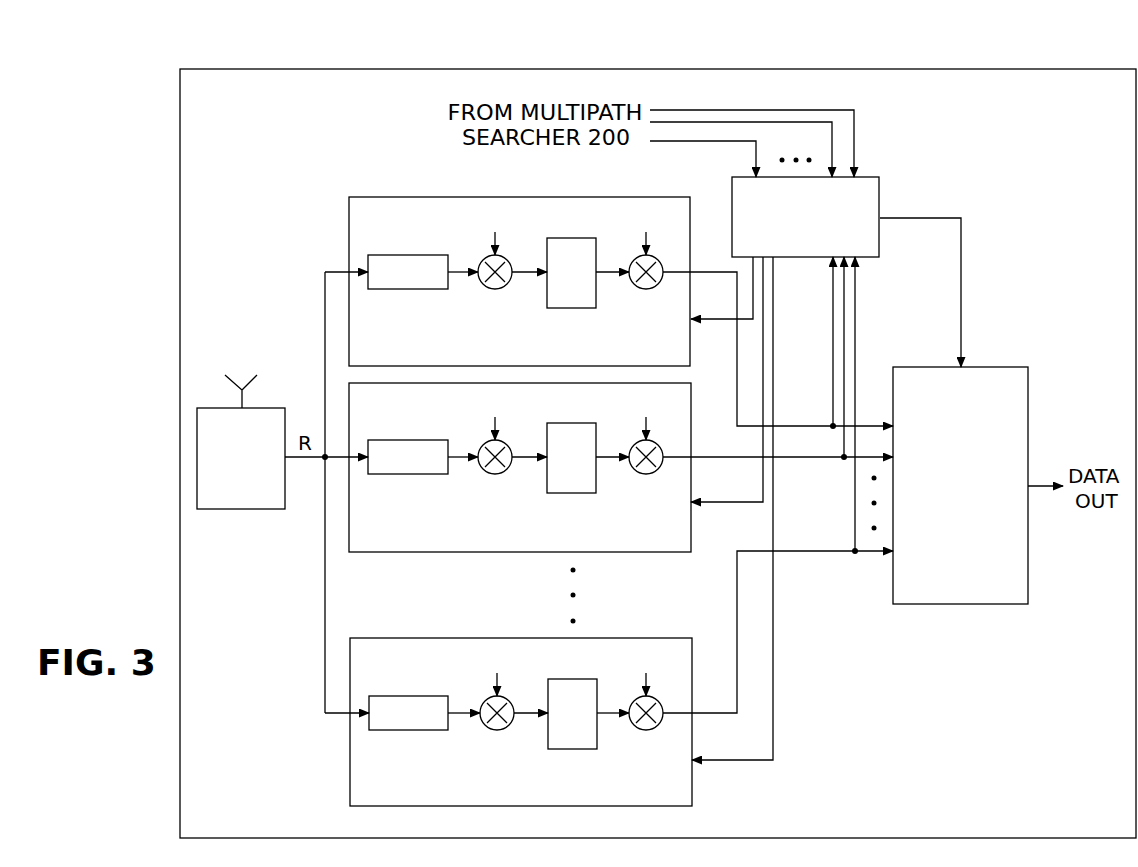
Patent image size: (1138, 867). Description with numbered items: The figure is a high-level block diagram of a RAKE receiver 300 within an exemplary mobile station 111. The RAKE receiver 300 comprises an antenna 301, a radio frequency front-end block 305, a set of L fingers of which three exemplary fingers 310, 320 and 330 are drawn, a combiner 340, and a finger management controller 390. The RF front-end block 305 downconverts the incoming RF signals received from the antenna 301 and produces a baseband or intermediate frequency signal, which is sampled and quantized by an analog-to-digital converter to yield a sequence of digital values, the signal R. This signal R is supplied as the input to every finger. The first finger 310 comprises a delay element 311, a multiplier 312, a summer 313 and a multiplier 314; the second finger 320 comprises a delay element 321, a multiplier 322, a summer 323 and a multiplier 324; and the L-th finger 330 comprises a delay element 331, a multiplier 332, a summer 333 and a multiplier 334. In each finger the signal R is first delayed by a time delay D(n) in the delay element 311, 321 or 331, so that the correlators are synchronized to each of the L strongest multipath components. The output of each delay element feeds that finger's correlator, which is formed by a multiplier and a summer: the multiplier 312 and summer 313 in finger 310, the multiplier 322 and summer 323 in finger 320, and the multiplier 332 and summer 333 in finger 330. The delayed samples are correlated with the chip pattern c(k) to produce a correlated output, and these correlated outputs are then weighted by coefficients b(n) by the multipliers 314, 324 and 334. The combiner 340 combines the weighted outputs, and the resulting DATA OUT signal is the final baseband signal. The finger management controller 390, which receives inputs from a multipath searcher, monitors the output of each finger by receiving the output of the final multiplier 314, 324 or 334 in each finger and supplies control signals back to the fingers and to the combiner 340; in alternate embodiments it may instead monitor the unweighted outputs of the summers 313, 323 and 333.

The mobile station 111 is at (660, 69).
The RAKE receiver 300 is at (821, 688).
The antenna 301 is at (234, 384).
The radio frequency (RF) front-end block 305 is at (240, 509).
The finger 310 is at (349, 230).
The delay element 311 is at (405, 290).
The multiplier 312 is at (495, 290).
The summer 313 is at (573, 308).
The multiplier 314 is at (646, 290).
The finger 320 is at (380, 552).
The delay element 321 is at (405, 475).
The multiplier 322 is at (495, 475).
The summer 323 is at (573, 493).
The multiplier 324 is at (646, 475).
The finger 330 is at (480, 638).
The delay element 331 is at (405, 731).
The multiplier 332 is at (497, 731).
The summer 333 is at (574, 749).
The multiplier 334 is at (646, 731).
The combiner 340 is at (960, 604).
The finger management controller 390 is at (880, 192).